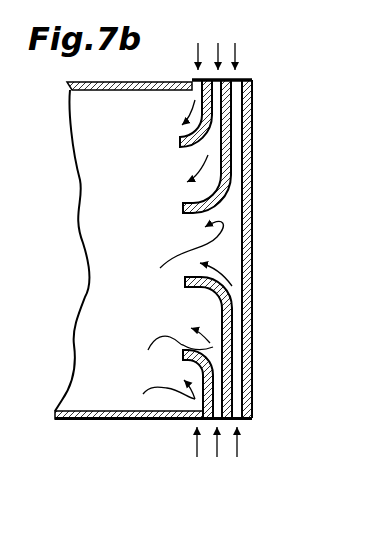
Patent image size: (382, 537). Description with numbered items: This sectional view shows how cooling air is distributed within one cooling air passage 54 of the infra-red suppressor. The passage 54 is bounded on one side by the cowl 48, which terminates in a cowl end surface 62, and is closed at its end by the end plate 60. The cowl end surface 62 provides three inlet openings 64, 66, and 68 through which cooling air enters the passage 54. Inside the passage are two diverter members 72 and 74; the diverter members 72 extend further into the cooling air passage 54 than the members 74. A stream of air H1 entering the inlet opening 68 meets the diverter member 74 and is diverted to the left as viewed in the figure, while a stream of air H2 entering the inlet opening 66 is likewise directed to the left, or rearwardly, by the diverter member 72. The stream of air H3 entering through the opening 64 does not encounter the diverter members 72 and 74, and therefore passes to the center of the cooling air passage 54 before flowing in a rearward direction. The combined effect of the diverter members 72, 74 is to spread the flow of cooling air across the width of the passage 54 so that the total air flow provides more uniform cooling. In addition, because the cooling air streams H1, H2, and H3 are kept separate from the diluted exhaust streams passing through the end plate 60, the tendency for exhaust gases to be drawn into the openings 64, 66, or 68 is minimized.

The cowl 48 is at (93, 421).
The cooling air passage 54 is at (137, 259).
The end plate 60 is at (253, 109).
The cowl end surface 62 is at (193, 80).
The inlet opening 64 is at (236, 421).
The inlet opening 66 is at (217, 421).
The inlet opening 68 is at (200, 419).
The diverter member 72 is at (214, 214).
The diverter member 74 is at (190, 149).
The stream of air H1 is at (151, 387).
The stream of air H2 is at (160, 348).
The stream of air H3 is at (180, 266).